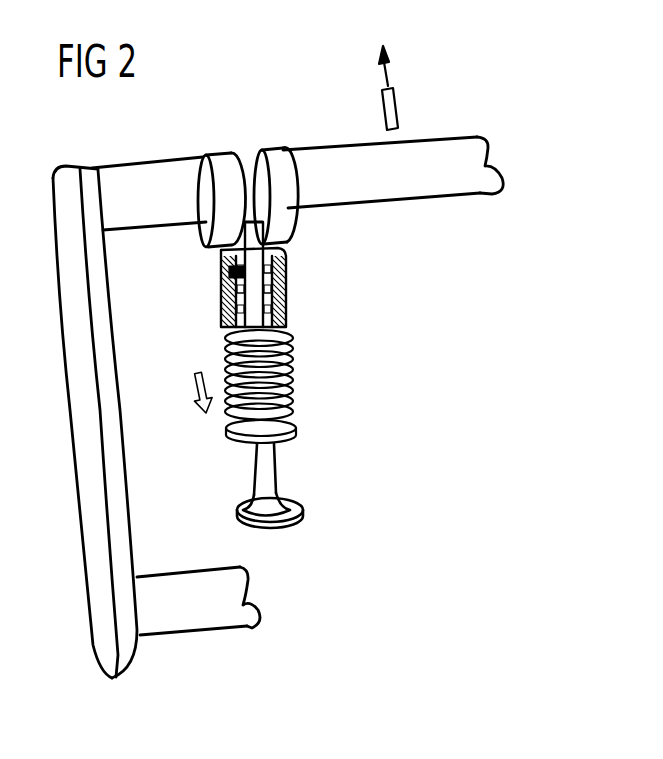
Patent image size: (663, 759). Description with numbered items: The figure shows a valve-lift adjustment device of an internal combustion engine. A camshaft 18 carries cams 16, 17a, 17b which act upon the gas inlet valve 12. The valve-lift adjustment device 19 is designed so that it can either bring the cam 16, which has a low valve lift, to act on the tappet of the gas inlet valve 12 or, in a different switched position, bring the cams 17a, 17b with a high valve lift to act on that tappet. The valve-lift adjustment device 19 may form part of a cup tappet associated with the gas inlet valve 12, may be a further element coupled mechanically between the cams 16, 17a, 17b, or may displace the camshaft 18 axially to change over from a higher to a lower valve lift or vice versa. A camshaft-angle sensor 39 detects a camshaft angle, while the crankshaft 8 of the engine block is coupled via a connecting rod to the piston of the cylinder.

The crankshaft 8 is at (210, 617).
The gas inlet valve 12 is at (268, 472).
The cam 16 is at (262, 205).
The cam 17a is at (287, 217).
The cam 17b is at (200, 233).
The camshaft 18 is at (151, 177).
The valve-lift adjustment device 19 is at (216, 257).
The camshaft-angle sensor 39 is at (392, 107).